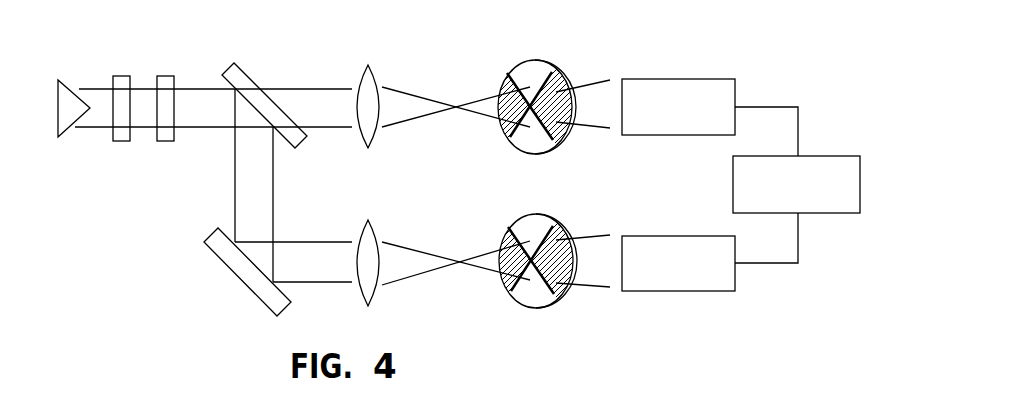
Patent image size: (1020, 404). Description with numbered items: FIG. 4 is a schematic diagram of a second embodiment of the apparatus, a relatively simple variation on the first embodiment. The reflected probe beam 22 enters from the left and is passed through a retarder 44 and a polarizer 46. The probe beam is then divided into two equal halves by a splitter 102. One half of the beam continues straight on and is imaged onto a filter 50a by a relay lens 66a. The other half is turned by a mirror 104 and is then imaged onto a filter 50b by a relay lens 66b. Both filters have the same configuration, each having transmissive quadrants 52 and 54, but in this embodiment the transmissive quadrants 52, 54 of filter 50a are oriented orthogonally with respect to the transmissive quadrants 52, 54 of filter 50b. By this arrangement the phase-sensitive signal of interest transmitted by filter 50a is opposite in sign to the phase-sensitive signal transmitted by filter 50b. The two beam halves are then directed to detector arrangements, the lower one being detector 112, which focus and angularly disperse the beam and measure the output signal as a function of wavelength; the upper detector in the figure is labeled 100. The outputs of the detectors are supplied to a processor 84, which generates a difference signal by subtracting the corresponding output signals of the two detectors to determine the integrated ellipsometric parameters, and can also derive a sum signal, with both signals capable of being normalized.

The reflected probe beam 22 is at (93, 128).
The retarder 44 is at (118, 76).
The polarizer 46 is at (163, 76).
The splitter 102 is at (246, 72).
The mirror 104 is at (225, 268).
The relay lens 66a is at (375, 78).
The relay lens 66b is at (375, 232).
The filter 50a is at (512, 68).
The filter 50b is at (530, 310).
The transmissive quadrant 52 is at (532, 72).
The transmissive quadrant 54 is at (542, 147).
The first detector 100 is at (697, 78).
The detector arrangement 112 is at (695, 292).
The processor 84 is at (823, 157).